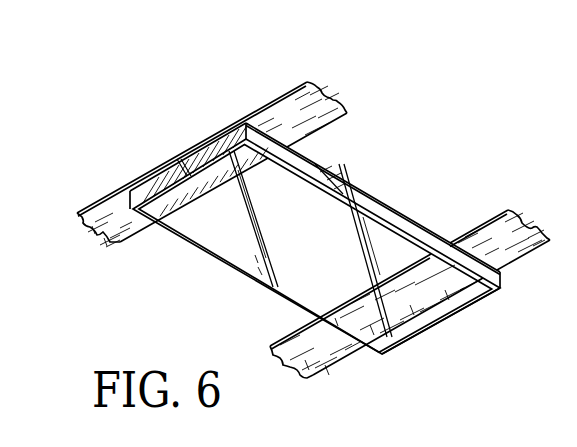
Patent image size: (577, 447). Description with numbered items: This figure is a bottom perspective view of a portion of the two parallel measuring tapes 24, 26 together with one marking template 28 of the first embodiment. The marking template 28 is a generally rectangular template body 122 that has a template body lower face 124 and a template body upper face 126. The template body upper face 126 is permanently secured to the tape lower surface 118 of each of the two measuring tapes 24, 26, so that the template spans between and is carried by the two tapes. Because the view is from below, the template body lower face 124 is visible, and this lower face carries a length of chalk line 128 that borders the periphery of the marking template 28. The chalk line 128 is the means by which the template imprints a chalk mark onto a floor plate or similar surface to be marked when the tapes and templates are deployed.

The measuring tape 24 is at (479, 205).
The measuring tape 26 is at (268, 89).
The marking template 28 is at (219, 288).
The tape lower surface 118 is at (103, 206).
The template body 122 is at (394, 176).
The template body lower face 124 is at (195, 230).
The template body upper face 126 is at (345, 190).
The chalk line 128 is at (458, 311).